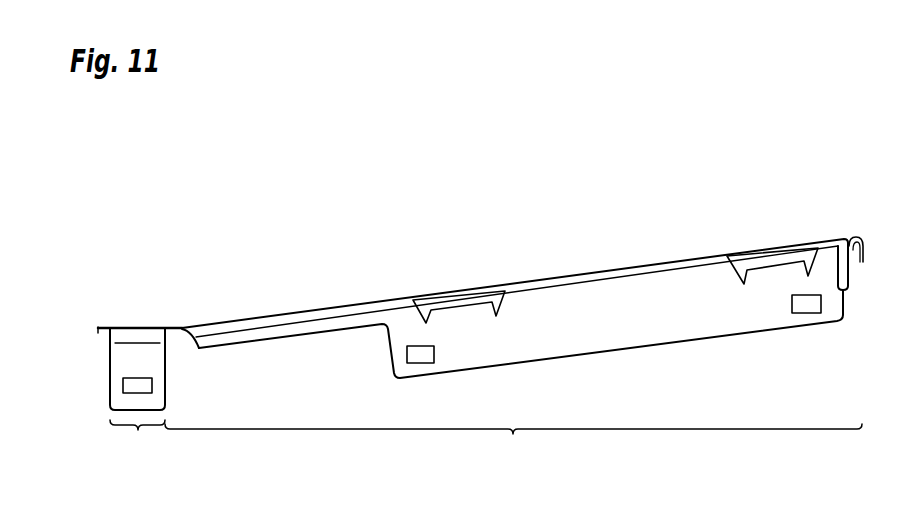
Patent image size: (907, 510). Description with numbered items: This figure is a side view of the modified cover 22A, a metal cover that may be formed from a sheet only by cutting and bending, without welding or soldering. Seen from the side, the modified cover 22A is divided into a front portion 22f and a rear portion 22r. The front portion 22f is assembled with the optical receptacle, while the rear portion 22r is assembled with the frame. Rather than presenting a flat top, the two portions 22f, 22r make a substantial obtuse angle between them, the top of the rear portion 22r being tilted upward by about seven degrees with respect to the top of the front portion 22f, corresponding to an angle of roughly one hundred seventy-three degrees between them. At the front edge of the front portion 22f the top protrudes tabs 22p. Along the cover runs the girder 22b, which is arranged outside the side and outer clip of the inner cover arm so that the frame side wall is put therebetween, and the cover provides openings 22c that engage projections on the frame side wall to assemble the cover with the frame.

The modified cover 22A is at (764, 134).
The girder 22b is at (278, 322).
The tab 22p is at (103, 326).
The opening 22c is at (137, 385).
The front portion 22f is at (137, 393).
The rear portion 22r is at (513, 442).